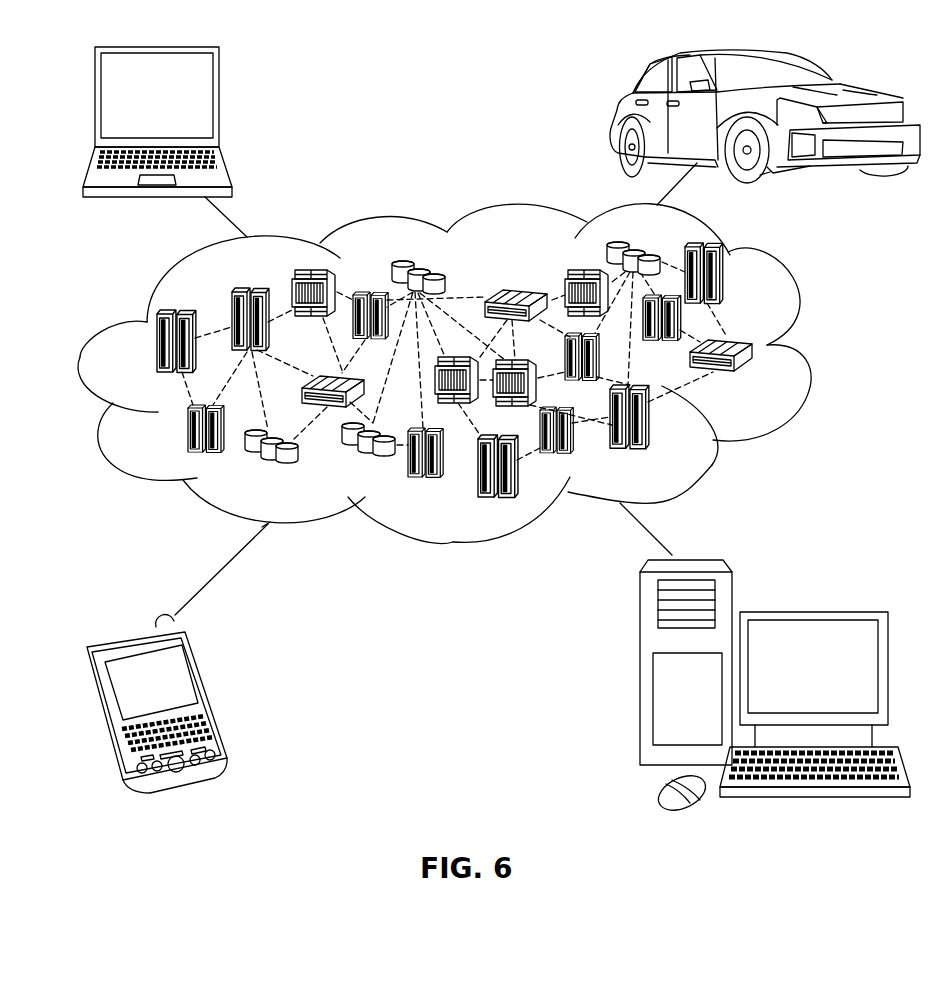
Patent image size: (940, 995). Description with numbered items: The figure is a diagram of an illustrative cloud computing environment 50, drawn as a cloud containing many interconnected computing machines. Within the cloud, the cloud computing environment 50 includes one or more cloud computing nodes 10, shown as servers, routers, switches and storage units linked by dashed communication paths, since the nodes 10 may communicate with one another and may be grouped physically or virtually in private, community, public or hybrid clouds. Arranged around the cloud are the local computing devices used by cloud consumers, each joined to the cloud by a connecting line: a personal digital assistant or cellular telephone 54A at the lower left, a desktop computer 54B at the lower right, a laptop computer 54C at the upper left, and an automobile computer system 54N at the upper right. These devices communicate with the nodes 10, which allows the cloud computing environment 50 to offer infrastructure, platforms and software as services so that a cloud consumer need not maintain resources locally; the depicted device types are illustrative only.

The cloud computing node 10 is at (758, 378).
The cloud computing environment 50 is at (810, 350).
The personal digital assistant or cellular telephone 54A is at (210, 693).
The desktop computer 54B is at (810, 612).
The laptop computer 54C is at (219, 103).
The automobile computer system 54N is at (612, 118).